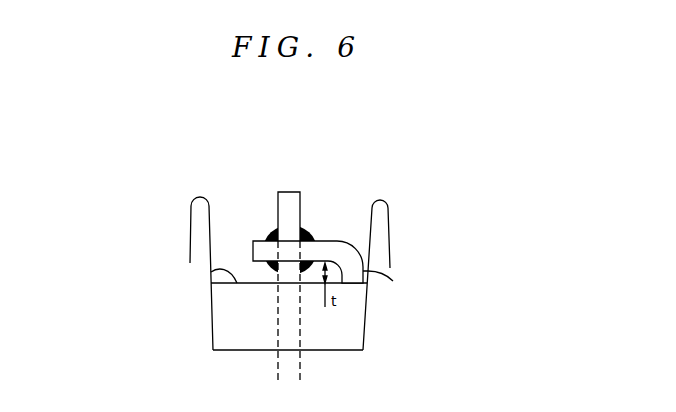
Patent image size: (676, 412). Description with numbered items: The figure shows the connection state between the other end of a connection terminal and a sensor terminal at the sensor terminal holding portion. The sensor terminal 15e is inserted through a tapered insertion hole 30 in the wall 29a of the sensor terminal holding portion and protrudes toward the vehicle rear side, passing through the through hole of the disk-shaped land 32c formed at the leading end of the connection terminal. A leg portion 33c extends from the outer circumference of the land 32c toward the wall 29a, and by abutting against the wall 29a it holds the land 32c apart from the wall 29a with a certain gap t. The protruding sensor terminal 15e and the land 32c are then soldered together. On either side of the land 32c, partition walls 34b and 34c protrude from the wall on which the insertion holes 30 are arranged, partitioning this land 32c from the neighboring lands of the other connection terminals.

The sensor terminal 15e is at (289, 200).
The insertion hole 30 is at (301, 249).
The land 32c is at (262, 246).
The partition wall 34c is at (200, 213).
The partition wall 34b is at (380, 213).
The wall 29a is at (211, 272).
The leg portion 33c is at (399, 281).